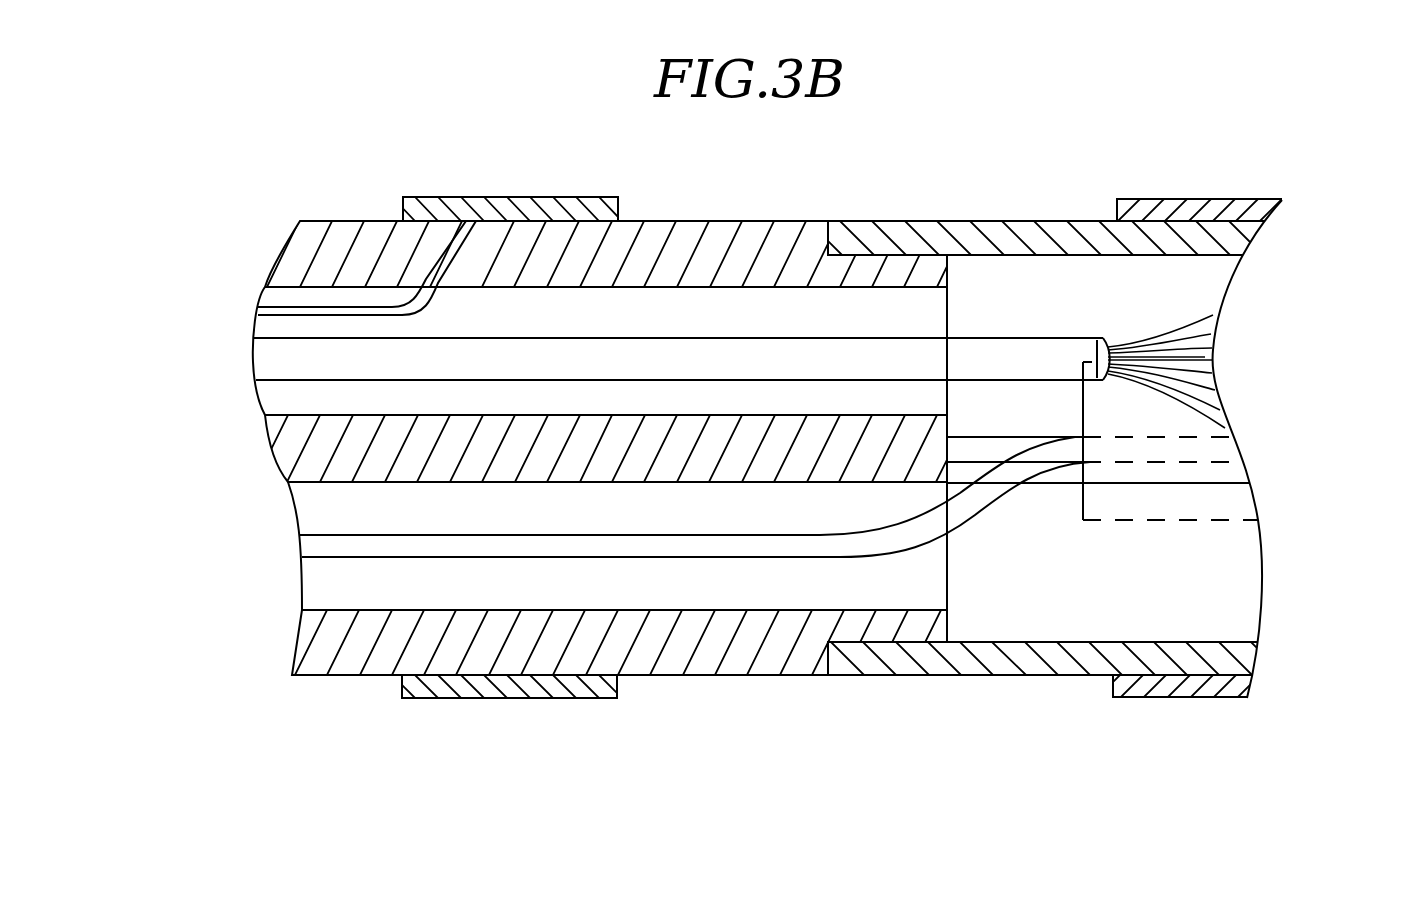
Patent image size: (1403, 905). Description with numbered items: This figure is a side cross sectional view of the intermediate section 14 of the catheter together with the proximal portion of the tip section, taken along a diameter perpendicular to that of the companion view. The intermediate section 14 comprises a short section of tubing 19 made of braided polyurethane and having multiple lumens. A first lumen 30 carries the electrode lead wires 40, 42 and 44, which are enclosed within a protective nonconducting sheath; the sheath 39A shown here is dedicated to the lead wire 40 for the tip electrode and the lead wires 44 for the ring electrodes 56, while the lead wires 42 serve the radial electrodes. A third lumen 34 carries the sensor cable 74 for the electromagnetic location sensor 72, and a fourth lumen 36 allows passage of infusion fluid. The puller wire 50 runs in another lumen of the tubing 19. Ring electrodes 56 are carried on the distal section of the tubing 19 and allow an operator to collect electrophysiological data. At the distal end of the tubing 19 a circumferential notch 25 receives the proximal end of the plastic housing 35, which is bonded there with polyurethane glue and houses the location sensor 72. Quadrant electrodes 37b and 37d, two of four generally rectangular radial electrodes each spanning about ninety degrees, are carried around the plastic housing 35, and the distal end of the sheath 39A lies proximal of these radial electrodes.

The intermediate section 14 is at (455, 715).
The tubing 19 is at (693, 220).
The circumferential notch 25 is at (878, 253).
The first lumen 30 is at (268, 402).
The third lumen 34 is at (312, 502).
The plastic housing 35 is at (1017, 220).
The fourth lumen 36 is at (1050, 720).
The quadrant electrode 37b is at (1202, 701).
The quadrant electrode 37d is at (1242, 200).
The sheath 39A is at (267, 362).
The lead wire 40 is at (1212, 361).
The lead wires 42 is at (1213, 315).
The lead wires 44 is at (270, 310).
The puller wire 50 is at (1217, 453).
The ring electrodes 56 is at (497, 194).
The electromagnetic location sensor 72 is at (1230, 507).
The sensor cable 74 is at (737, 548).